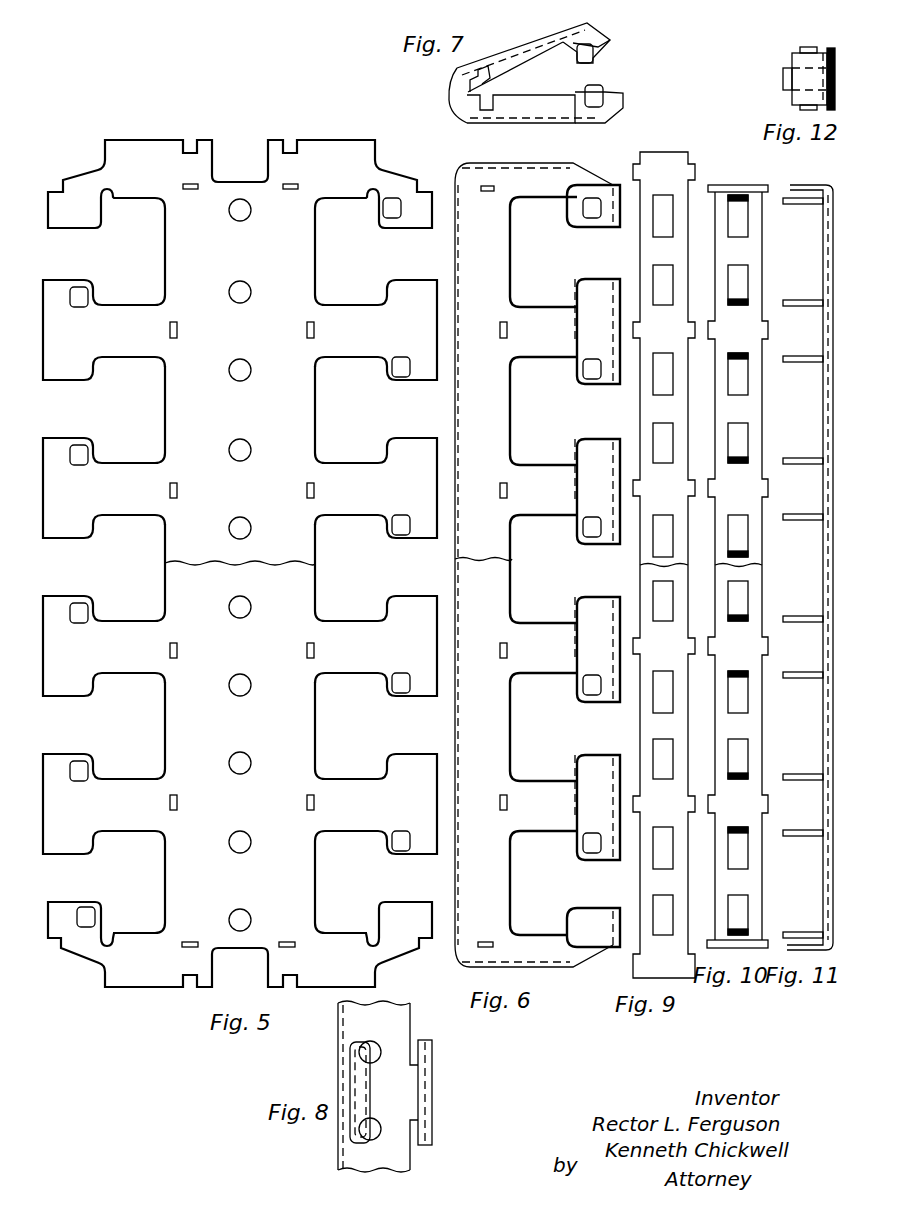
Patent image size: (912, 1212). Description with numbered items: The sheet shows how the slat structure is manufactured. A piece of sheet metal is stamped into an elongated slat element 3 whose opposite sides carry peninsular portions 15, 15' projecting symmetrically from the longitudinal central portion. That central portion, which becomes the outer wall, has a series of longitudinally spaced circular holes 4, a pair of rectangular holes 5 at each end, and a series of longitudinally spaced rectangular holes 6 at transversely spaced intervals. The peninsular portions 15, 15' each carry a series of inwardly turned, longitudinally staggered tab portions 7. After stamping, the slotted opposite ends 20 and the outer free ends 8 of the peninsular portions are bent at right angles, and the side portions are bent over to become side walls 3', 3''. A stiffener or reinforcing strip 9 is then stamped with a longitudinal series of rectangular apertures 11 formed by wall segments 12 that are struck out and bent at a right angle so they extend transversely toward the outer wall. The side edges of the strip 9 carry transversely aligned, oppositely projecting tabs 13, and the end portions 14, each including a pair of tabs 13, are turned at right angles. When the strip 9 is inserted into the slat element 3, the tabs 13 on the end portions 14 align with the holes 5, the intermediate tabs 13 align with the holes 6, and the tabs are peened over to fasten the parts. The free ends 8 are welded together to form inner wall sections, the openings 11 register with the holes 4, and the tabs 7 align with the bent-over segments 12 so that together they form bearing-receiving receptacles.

In FIG. 5, the slat element 3 is at (240, 563).
In FIG. 6, the slat element 3 is at (534, 565).
In FIG. 7, the slat element 3 is at (536, 73).
In FIG. 8, the slat element 3 is at (378, 1086).
In FIG. 5, the side wall 3' is at (329, 728).
In FIG. 6, the side wall 3' is at (528, 563).
In FIG. 5, the side wall 3'' is at (146, 725).
In FIG. 5, the circular holes 4 is at (244, 221).
In FIG. 8, the circular holes 4 is at (378, 1137).
In FIG. 5, the rectangular holes 5 is at (191, 194).
In FIG. 6, the rectangular holes 5 is at (488, 192).
In FIG. 5, the rectangular holes 6 is at (305, 332).
In FIG. 6, the rectangular holes 6 is at (500, 332).
In FIG. 5, the tab portions 7 is at (389, 220).
In FIG. 6, the tab portions 7 is at (592, 359).
In FIG. 7, the tab portions 7 is at (595, 88).
In FIG. 8, the tab portions 7 is at (384, 1070).
In FIG. 5, the free ends of peninsular portions 8 is at (434, 280).
In FIG. 6, the free ends of peninsular portions 8 is at (620, 227).
In FIG. 7, the free ends of peninsular portions 8 is at (612, 40).
In FIG. 8, the free ends of peninsular portions 8 is at (420, 1088).
In FIG. 9, the reinforcing strip 9 is at (638, 970).
In FIG. 10, the reinforcing strip 9 is at (765, 882).
In FIG. 11, the reinforcing strip 9 is at (822, 878).
In FIG. 12, the reinforcing strip 9 is at (792, 98).
In FIG. 9, the rectangular apertures 11 is at (661, 396).
In FIG. 10, the rectangular apertures 11 is at (737, 396).
In FIG. 10, the wall segments 12 is at (737, 780).
In FIG. 11, the wall segments 12 is at (790, 307).
In FIG. 12, the wall segments 12 is at (783, 80).
In FIG. 9, the tabs 13 is at (697, 657).
In FIG. 10, the tabs 13 is at (716, 185).
In FIG. 11, the tabs 13 is at (822, 492).
In FIG. 12, the tabs 13 is at (808, 47).
In FIG. 9, the end portions 14 is at (690, 156).
In FIG. 11, the end portions 14 is at (800, 186).
In FIG. 12, the end portions 14 is at (792, 60).
In FIG. 5, the peninsular portion 15 is at (355, 300).
In FIG. 6, the peninsular portion 15 is at (547, 296).
In FIG. 5, the peninsular portion 15' is at (134, 294).
In FIG. 5, the slotted opposite ends 20 is at (156, 152).
In FIG. 6, the slotted opposite ends 20 is at (567, 163).
In FIG. 7, the slotted opposite ends 20 is at (543, 103).